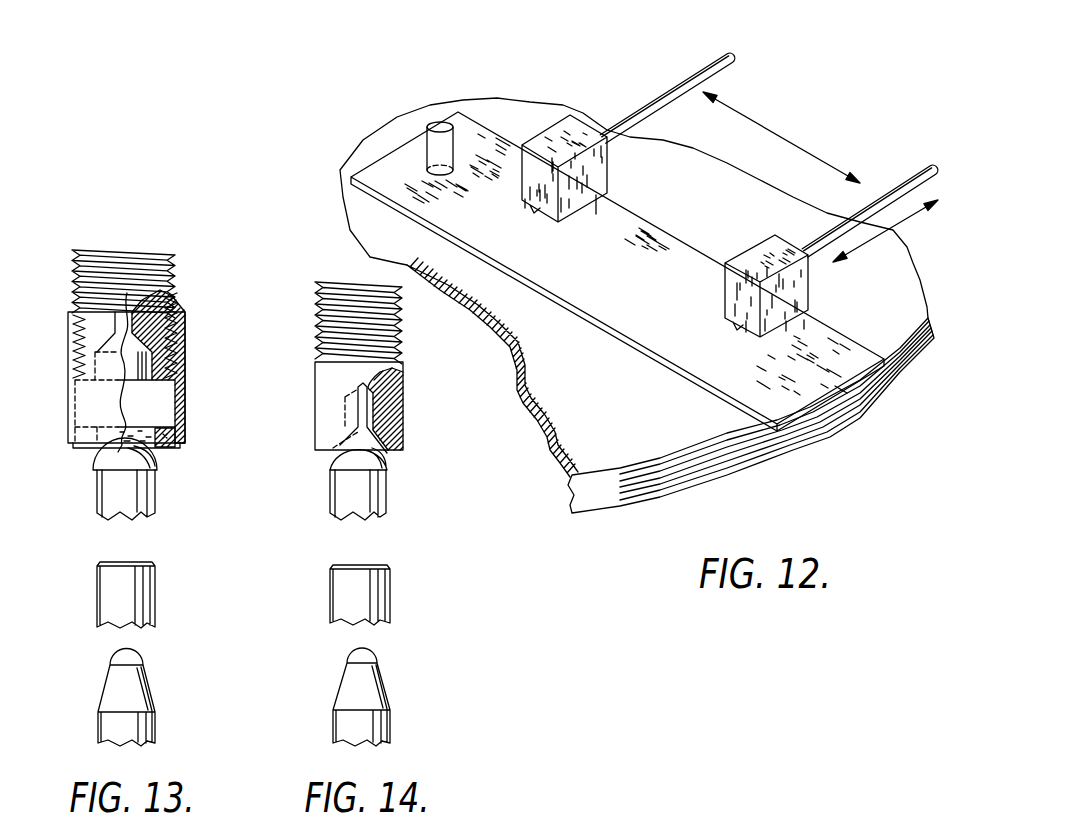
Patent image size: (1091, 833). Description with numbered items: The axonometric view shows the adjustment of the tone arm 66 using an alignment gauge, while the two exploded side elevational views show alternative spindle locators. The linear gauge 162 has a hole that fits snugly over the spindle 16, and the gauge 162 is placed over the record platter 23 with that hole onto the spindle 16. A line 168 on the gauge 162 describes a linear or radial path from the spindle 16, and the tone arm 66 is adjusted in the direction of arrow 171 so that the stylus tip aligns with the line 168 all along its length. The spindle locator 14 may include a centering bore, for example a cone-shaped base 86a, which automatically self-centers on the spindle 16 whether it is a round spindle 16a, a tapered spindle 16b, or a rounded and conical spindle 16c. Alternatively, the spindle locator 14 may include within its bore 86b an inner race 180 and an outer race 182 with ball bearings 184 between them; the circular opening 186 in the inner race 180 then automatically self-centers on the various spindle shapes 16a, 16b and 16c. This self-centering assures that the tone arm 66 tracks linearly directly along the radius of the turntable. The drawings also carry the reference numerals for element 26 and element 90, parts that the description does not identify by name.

In FIG. 13, the spindle locator 14 is at (185, 380).
In FIG. 14, the spindle locator 14 is at (315, 383).
In FIG. 12, the spindle 16 is at (440, 127).
In FIG. 13, the round spindle 16a is at (102, 498).
In FIG. 14, the round spindle 16a is at (335, 498).
In FIG. 13, the tapered spindle 16b is at (107, 592).
In FIG. 14, the tapered spindle 16b is at (340, 592).
In FIG. 13, the rounded and conical spindle 16c is at (107, 722).
In FIG. 14, the rounded and conical spindle 16c is at (338, 725).
In FIG. 12, the record platter 23 is at (760, 450).
In FIG. 12, the block 26 is at (563, 130).
In FIG. 12, the tone arm 66 is at (663, 90).
In FIG. 14, the cone-shaped base 86a is at (387, 453).
In FIG. 13, the bore 86b is at (180, 447).
In FIG. 13, the threaded portion 90 is at (173, 285).
In FIG. 14, the threaded portion 90 is at (315, 310).
In FIG. 12, the linear gauge 162 is at (570, 308).
In FIG. 12, the line 168 is at (655, 293).
In FIG. 12, the arrow 171 is at (857, 227).
In FIG. 13, the inner race 180 is at (162, 432).
In FIG. 13, the outer race 182 is at (172, 424).
In FIG. 13, the ball bearings 184 is at (163, 448).
In FIG. 13, the circular opening 186 is at (103, 428).